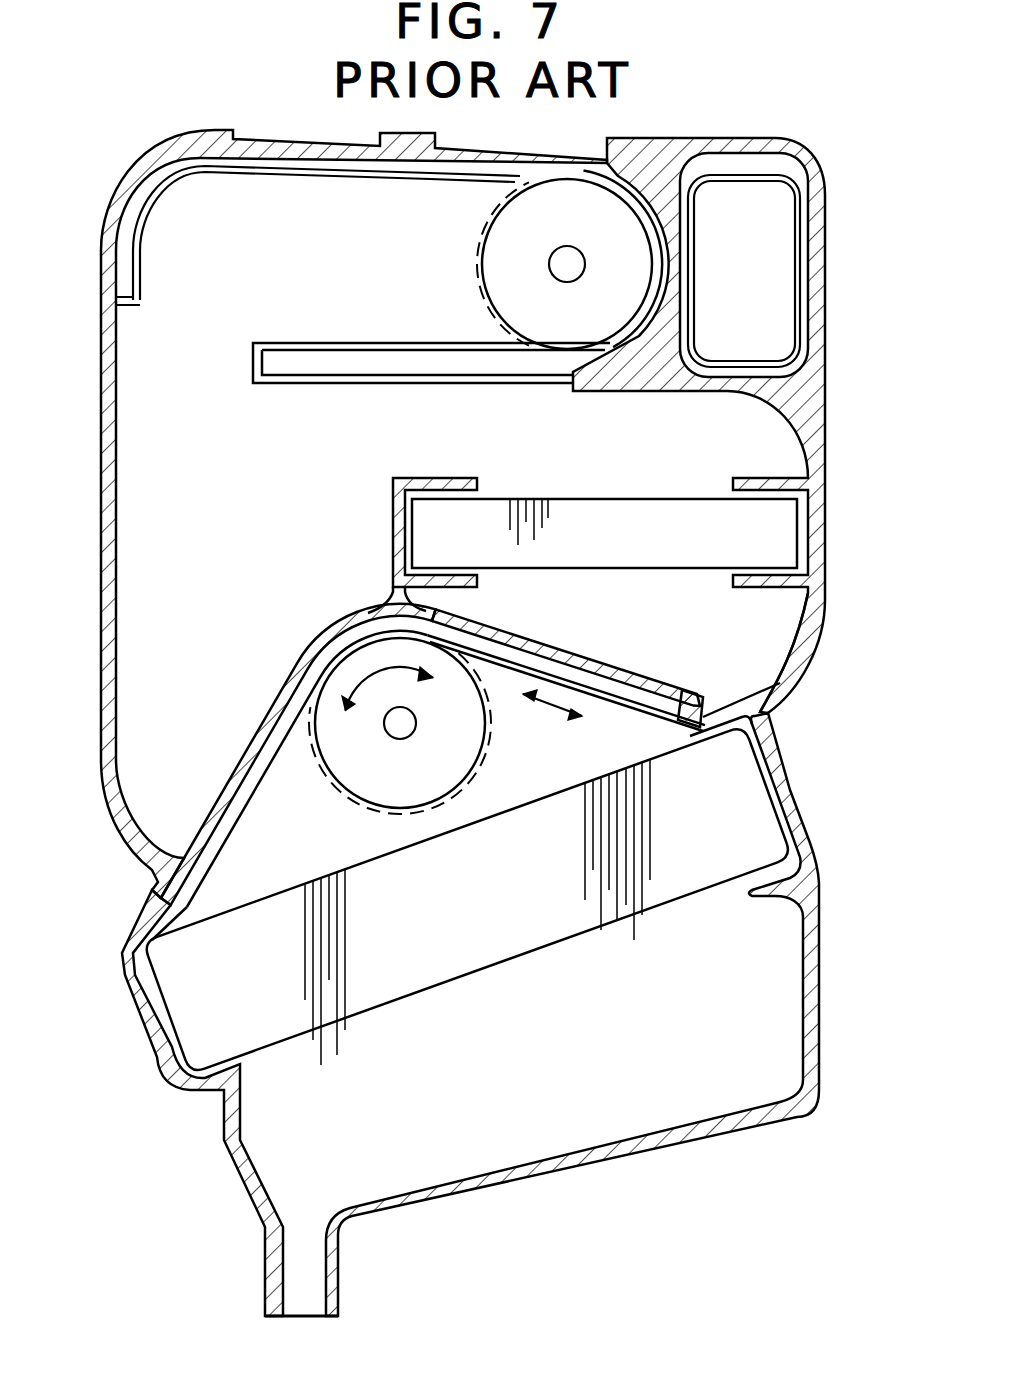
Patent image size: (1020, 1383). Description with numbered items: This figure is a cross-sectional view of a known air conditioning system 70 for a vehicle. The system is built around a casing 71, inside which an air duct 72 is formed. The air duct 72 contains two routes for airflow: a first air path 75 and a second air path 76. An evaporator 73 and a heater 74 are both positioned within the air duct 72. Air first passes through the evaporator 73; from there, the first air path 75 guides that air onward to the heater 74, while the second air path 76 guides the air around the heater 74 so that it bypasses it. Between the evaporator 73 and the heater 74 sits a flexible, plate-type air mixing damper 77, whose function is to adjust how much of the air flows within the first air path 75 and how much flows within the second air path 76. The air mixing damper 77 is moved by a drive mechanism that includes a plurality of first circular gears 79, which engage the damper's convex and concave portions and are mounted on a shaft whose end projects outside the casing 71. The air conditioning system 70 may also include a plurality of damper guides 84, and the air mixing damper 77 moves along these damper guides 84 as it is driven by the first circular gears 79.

The air conditioning system 70 is at (266, 132).
The casing 71 is at (802, 401).
The air duct 72 is at (572, 1052).
The evaporator 73 is at (743, 822).
The heater 74 is at (768, 532).
The first air path 75 is at (687, 643).
The second air path 76 is at (147, 690).
The air mixing damper 77 is at (640, 683).
The first circular gears 79 is at (328, 773).
The damper guides 84 is at (333, 643).